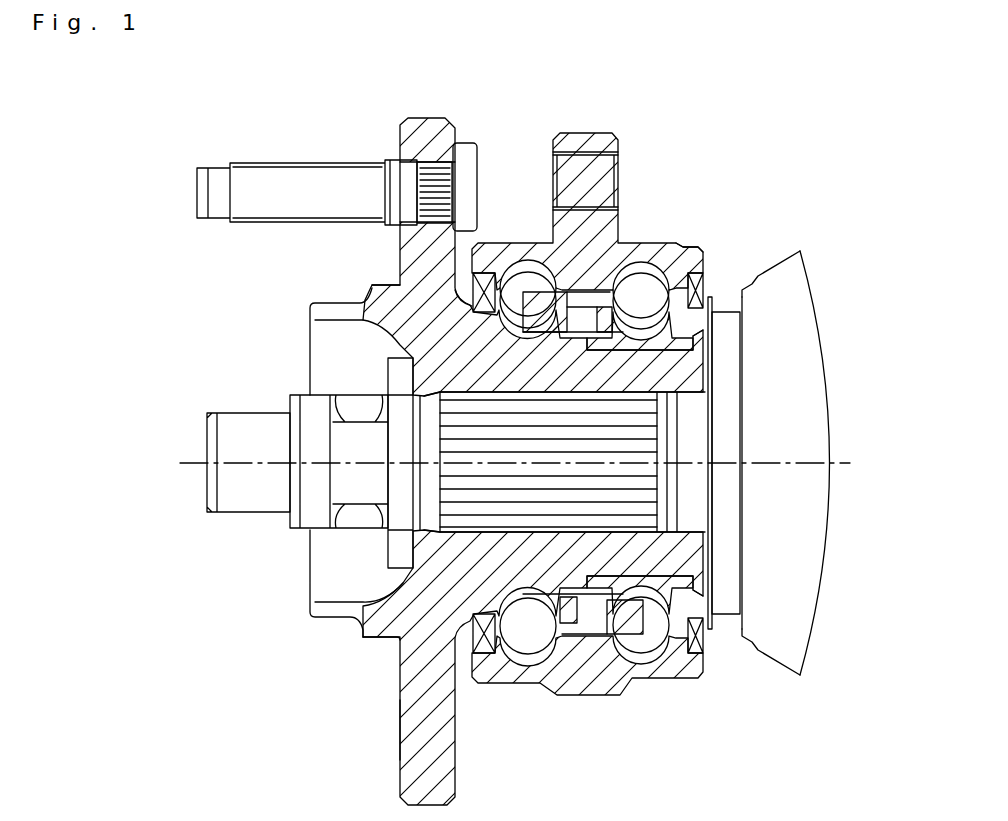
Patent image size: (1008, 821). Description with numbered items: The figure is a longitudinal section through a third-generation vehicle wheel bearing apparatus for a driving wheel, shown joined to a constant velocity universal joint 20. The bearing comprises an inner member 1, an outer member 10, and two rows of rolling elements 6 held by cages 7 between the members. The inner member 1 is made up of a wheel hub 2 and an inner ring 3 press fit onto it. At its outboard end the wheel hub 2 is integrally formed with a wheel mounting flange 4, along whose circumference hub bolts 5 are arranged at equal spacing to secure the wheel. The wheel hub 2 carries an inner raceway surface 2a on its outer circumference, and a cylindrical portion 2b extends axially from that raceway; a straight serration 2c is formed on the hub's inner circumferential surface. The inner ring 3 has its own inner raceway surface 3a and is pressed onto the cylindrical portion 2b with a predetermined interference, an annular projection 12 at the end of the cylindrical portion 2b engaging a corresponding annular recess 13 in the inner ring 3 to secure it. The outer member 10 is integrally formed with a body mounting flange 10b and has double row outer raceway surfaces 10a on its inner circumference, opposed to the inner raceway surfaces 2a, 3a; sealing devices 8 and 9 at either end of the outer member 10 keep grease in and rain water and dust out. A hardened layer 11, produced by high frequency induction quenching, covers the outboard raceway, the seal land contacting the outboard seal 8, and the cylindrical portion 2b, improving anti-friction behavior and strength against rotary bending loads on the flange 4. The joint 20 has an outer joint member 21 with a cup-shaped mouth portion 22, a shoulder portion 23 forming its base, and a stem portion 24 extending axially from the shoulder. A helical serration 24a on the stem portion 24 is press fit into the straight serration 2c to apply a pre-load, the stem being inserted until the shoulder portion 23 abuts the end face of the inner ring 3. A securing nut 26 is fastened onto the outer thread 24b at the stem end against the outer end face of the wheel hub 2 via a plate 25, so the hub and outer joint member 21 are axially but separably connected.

The inner member 1 is at (500, 443).
The wheel hub 2 is at (478, 443).
The inner raceway surface 2a is at (478, 283).
The cylindrical portion 2b is at (677, 345).
The serration 2c is at (428, 414).
The inner ring 3 is at (609, 391).
The inner raceway surface 3a is at (684, 312).
The wheel mounting flange 4 is at (432, 135).
The hub bolt 5 is at (315, 186).
The rolling element 6 is at (528, 637).
The cage 7 is at (603, 616).
The sealing device 8 is at (425, 687).
The sealing device 9 is at (698, 660).
The outer member 10 is at (560, 248).
The outer raceway surface 10a is at (516, 276).
The body mounting flange 10b is at (581, 135).
The hardened layer 11 is at (400, 287).
The annular projection 12 is at (722, 350).
The annular recess 13 is at (712, 614).
The constant velocity universal joint 20 is at (795, 484).
The outer joint member 21 is at (779, 619).
The mouth portion 22 is at (810, 407).
The shoulder portion 23 is at (728, 598).
The stem portion 24 is at (490, 535).
The serration 24a is at (400, 641).
The outer thread 24b is at (247, 512).
The plate 25 is at (397, 368).
The securing nut 26 is at (352, 533).